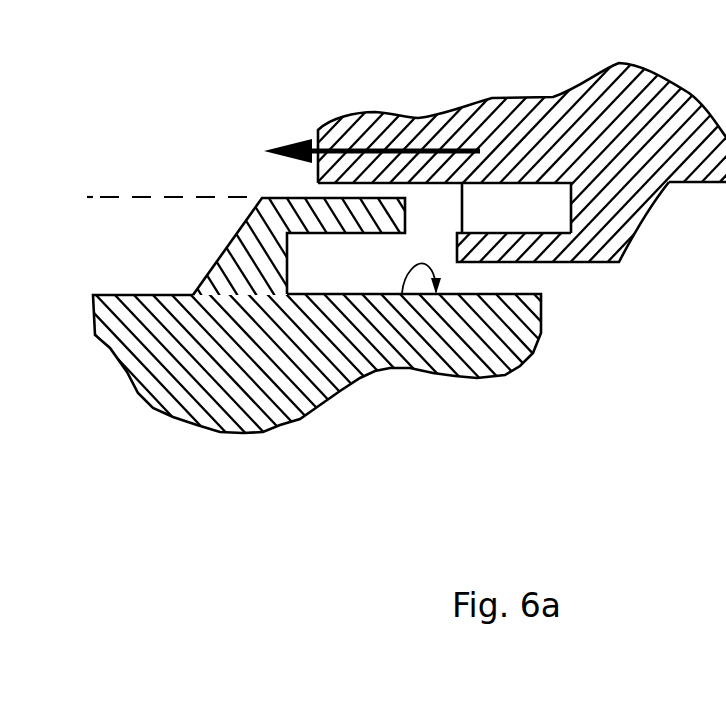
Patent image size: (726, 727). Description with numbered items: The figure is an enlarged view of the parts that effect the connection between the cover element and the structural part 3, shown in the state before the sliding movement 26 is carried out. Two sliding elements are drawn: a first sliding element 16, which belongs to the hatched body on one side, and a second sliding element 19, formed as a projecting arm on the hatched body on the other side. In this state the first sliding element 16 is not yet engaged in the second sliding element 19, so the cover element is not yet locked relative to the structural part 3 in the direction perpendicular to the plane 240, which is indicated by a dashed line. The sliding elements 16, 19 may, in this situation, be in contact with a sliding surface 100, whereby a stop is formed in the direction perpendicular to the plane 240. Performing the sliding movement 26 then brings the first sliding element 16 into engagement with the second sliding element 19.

The structural part 3 is at (540, 390).
The first sliding element 16 is at (558, 248).
The second sliding element 19 is at (268, 247).
The sliding movement 26 is at (407, 150).
The sliding surface 100 is at (423, 200).
The plane 240 is at (172, 195).